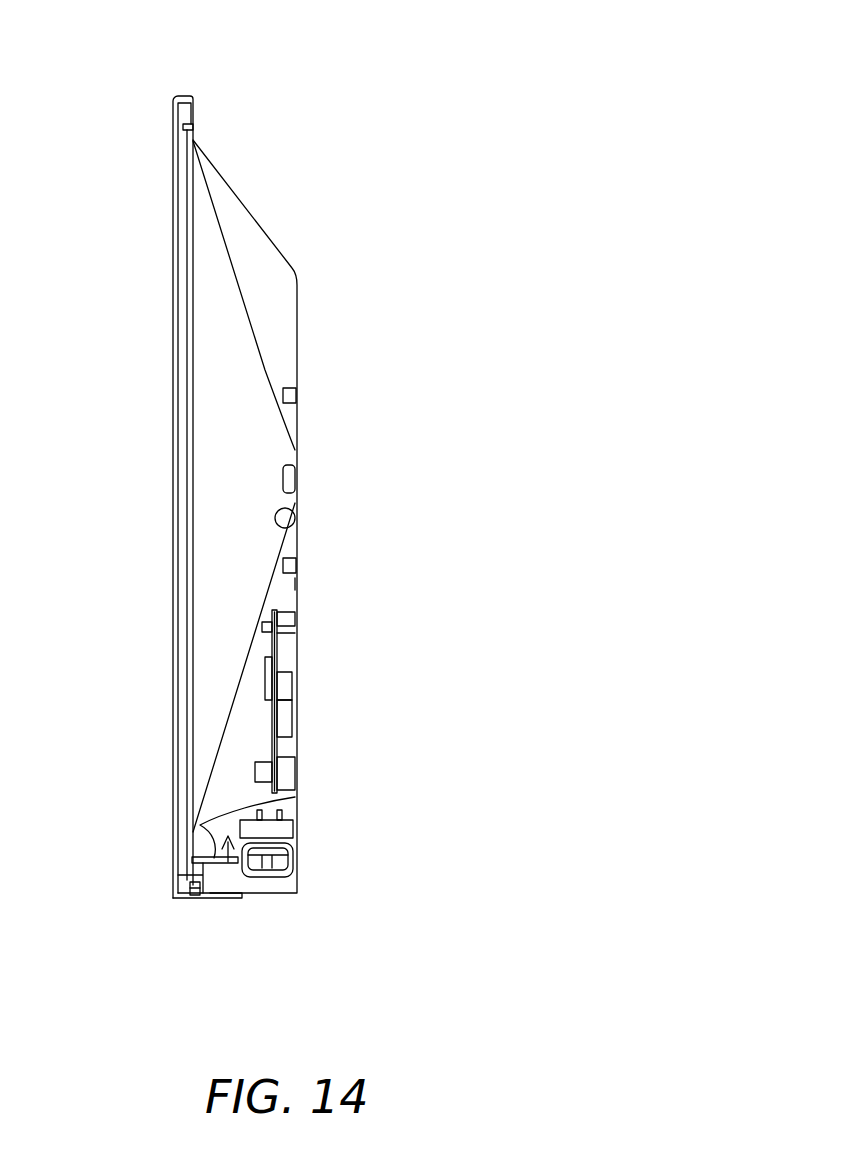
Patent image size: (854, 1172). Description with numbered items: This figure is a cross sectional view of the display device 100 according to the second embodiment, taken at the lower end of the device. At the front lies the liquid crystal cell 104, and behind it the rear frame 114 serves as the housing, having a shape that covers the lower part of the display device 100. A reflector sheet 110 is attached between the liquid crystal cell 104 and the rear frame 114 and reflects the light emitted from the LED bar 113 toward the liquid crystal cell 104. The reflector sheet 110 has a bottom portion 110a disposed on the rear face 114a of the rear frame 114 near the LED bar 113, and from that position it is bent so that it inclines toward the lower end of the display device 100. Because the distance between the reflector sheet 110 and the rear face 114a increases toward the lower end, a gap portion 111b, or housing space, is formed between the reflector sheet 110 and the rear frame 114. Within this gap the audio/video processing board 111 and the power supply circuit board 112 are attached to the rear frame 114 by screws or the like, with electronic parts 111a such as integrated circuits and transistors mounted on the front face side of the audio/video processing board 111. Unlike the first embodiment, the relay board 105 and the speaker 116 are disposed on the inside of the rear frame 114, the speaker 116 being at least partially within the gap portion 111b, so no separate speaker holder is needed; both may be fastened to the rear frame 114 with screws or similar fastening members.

The display device 100 is at (314, 110).
The liquid crystal cell 104 is at (172, 352).
The relay board 105 is at (222, 863).
The reflector sheet 110 is at (258, 333).
The bottom portion 110a is at (293, 537).
The audio/video processing board 111 is at (280, 714).
The power supply circuit board 112 is at (375, 701).
The electronic parts 111a is at (268, 662).
The gap portion 111b is at (228, 862).
The LED bar 113 is at (293, 481).
The rear frame 114 is at (263, 225).
The rear face 114a is at (297, 583).
The speaker 116 is at (285, 830).